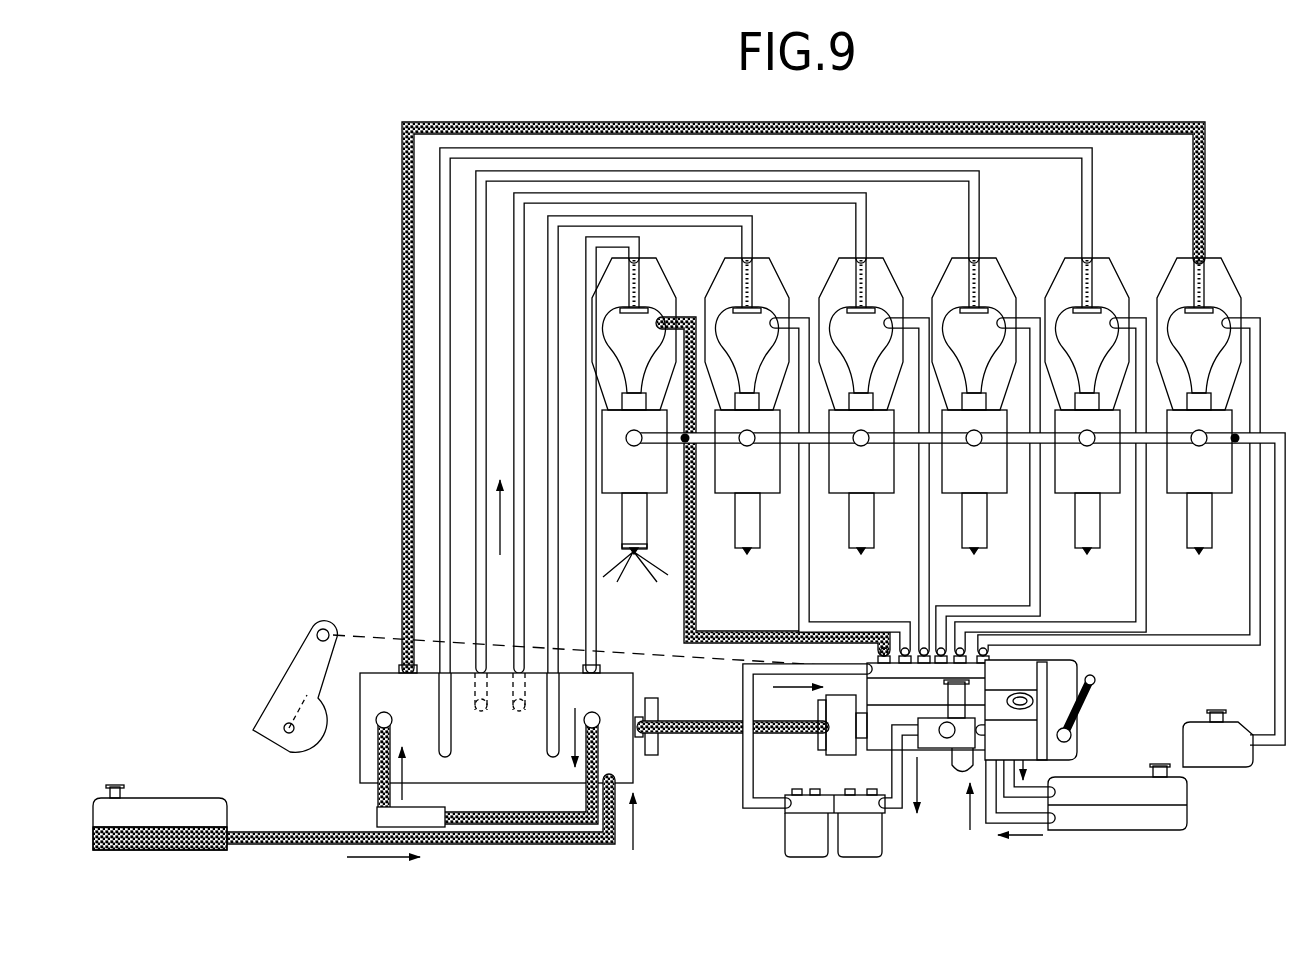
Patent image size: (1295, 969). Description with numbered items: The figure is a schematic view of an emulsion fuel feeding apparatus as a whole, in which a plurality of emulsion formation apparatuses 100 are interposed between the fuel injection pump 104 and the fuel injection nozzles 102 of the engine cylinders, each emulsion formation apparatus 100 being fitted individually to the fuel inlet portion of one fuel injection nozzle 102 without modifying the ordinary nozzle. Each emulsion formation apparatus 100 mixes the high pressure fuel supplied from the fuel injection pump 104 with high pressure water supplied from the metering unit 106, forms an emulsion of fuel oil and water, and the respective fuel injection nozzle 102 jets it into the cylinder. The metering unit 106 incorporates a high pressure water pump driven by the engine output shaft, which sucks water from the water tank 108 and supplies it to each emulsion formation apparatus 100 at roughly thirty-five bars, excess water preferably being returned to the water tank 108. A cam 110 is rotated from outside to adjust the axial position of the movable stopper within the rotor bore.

The emulsion formation apparatus 100 is at (728, 290).
The fuel injection nozzle 102 is at (657, 485).
The fuel injection pump 104 is at (1098, 698).
The metering unit 106 is at (638, 768).
The water tank 108 is at (218, 843).
The cam 110 is at (303, 742).